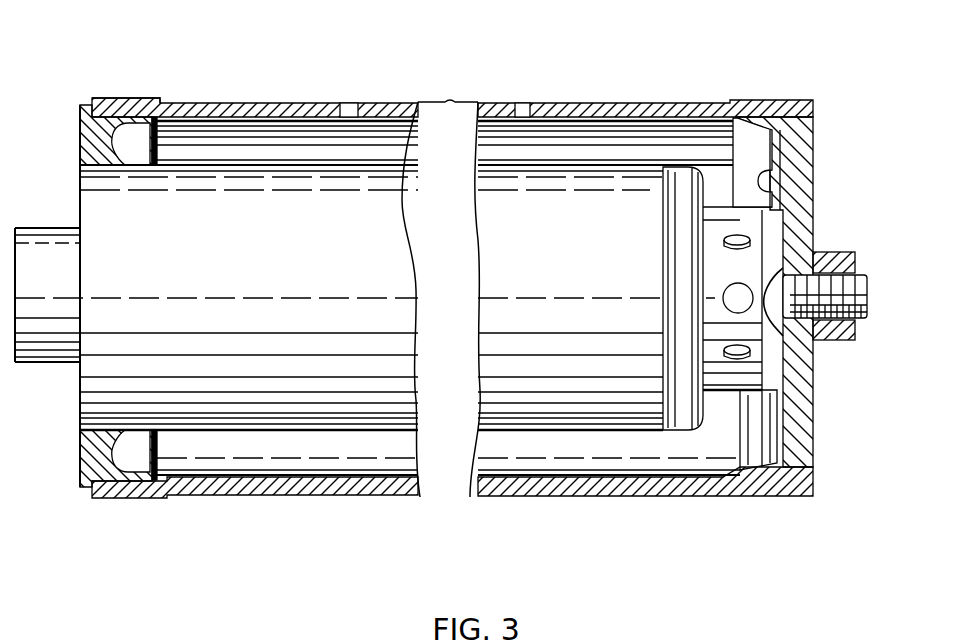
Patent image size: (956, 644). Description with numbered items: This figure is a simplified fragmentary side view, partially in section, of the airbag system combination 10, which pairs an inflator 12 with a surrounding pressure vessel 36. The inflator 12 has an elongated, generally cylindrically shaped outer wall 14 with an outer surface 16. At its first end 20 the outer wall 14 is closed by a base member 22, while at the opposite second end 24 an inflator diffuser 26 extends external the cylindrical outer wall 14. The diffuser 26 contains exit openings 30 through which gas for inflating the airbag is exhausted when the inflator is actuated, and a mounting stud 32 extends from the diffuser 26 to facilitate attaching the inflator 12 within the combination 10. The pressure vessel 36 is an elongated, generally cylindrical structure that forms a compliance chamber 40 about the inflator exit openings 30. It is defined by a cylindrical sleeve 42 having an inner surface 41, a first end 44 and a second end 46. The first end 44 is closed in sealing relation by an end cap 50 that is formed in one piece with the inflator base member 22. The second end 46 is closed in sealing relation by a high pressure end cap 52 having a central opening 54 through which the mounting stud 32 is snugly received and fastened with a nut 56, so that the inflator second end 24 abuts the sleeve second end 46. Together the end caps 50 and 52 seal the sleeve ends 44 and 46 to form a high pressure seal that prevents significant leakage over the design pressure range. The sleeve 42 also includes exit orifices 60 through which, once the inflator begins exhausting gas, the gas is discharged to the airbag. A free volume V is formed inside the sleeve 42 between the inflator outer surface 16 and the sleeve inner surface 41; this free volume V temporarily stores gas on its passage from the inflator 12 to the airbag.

The airbag system combination 10 is at (640, 82).
The inflator 12 is at (552, 360).
The outer wall 14 is at (271, 398).
The outer surface 16 is at (345, 433).
The first end 20 is at (102, 397).
The base member 22 is at (78, 205).
The second end 24 is at (671, 403).
The inflator diffuser 26 is at (774, 376).
The exit openings 30 is at (737, 237).
The mounting stud 32 is at (845, 297).
The pressure vessel 36 is at (220, 109).
The compliance chamber 40 is at (585, 137).
The inner surface 41 is at (278, 126).
The sleeve 42 is at (195, 483).
The first end 44 is at (100, 103).
The second end 46 is at (796, 103).
The end cap 50 is at (97, 132).
The high pressure end cap 52 is at (806, 448).
The central opening 54 is at (797, 272).
The nut 56 is at (836, 332).
The exit orifices 60 is at (349, 104).
The free volume V is at (499, 443).